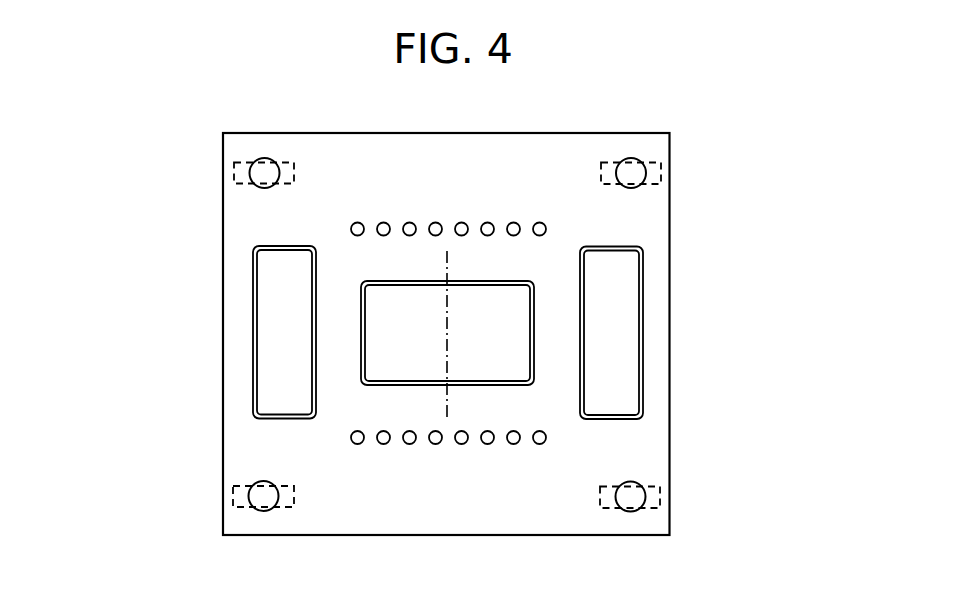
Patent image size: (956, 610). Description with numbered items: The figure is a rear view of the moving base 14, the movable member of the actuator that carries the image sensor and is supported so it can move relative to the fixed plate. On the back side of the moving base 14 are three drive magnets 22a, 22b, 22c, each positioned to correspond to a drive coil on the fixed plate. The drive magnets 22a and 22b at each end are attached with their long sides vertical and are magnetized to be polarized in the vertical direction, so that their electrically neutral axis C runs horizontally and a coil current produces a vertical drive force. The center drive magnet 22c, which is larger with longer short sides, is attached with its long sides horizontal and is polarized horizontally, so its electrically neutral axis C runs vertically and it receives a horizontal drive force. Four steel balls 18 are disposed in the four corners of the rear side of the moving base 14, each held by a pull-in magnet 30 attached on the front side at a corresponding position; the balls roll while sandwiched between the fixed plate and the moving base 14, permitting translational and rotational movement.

The moving base 14 is at (242, 457).
The steel balls 18 is at (261, 158).
The pull-in magnet 30 is at (233, 173).
The drive magnet 22a is at (272, 377).
The drive magnet 22b is at (620, 377).
The drive magnet 22c is at (430, 363).
The electrically neutral axis C is at (448, 273).